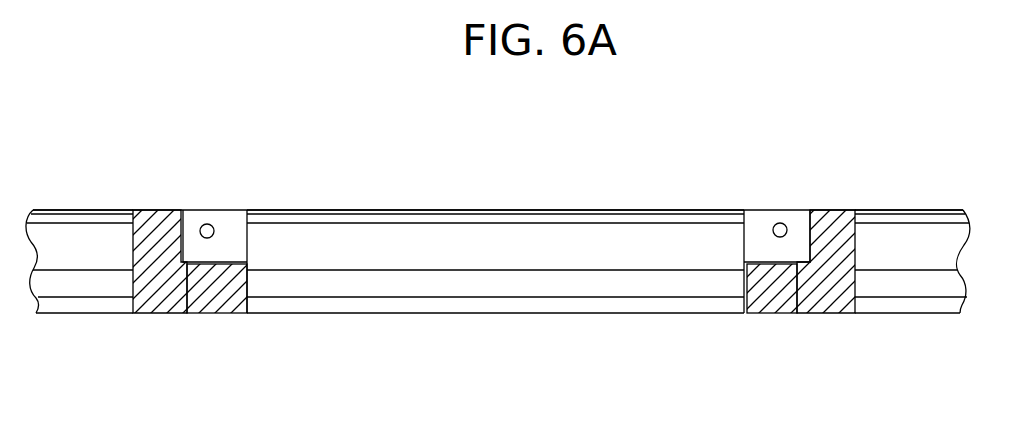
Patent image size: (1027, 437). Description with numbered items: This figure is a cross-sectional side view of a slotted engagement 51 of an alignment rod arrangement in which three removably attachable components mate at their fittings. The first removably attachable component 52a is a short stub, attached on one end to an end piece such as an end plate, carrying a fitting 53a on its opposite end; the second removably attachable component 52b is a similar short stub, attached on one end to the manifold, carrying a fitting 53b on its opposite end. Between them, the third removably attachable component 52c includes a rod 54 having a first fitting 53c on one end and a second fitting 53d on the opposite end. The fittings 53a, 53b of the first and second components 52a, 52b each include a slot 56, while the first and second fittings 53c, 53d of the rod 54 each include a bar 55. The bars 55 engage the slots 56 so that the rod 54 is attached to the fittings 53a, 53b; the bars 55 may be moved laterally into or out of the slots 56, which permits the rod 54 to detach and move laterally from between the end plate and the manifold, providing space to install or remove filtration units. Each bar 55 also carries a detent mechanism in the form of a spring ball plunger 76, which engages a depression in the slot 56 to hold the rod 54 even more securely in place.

The panel assembly 51 is at (590, 145).
The first removably attachable component 52a is at (118, 232).
The second removably attachable component 52b is at (885, 238).
The third removably attachable component 52c is at (460, 220).
The fitting 53a is at (201, 330).
The fitting 53b is at (787, 330).
The first fitting 53c is at (252, 205).
The second fitting 53d is at (788, 203).
The rod 54 is at (590, 236).
The bar 55 is at (258, 217).
The slot 56 is at (194, 268).
The spring ball plunger 76 is at (207, 224).